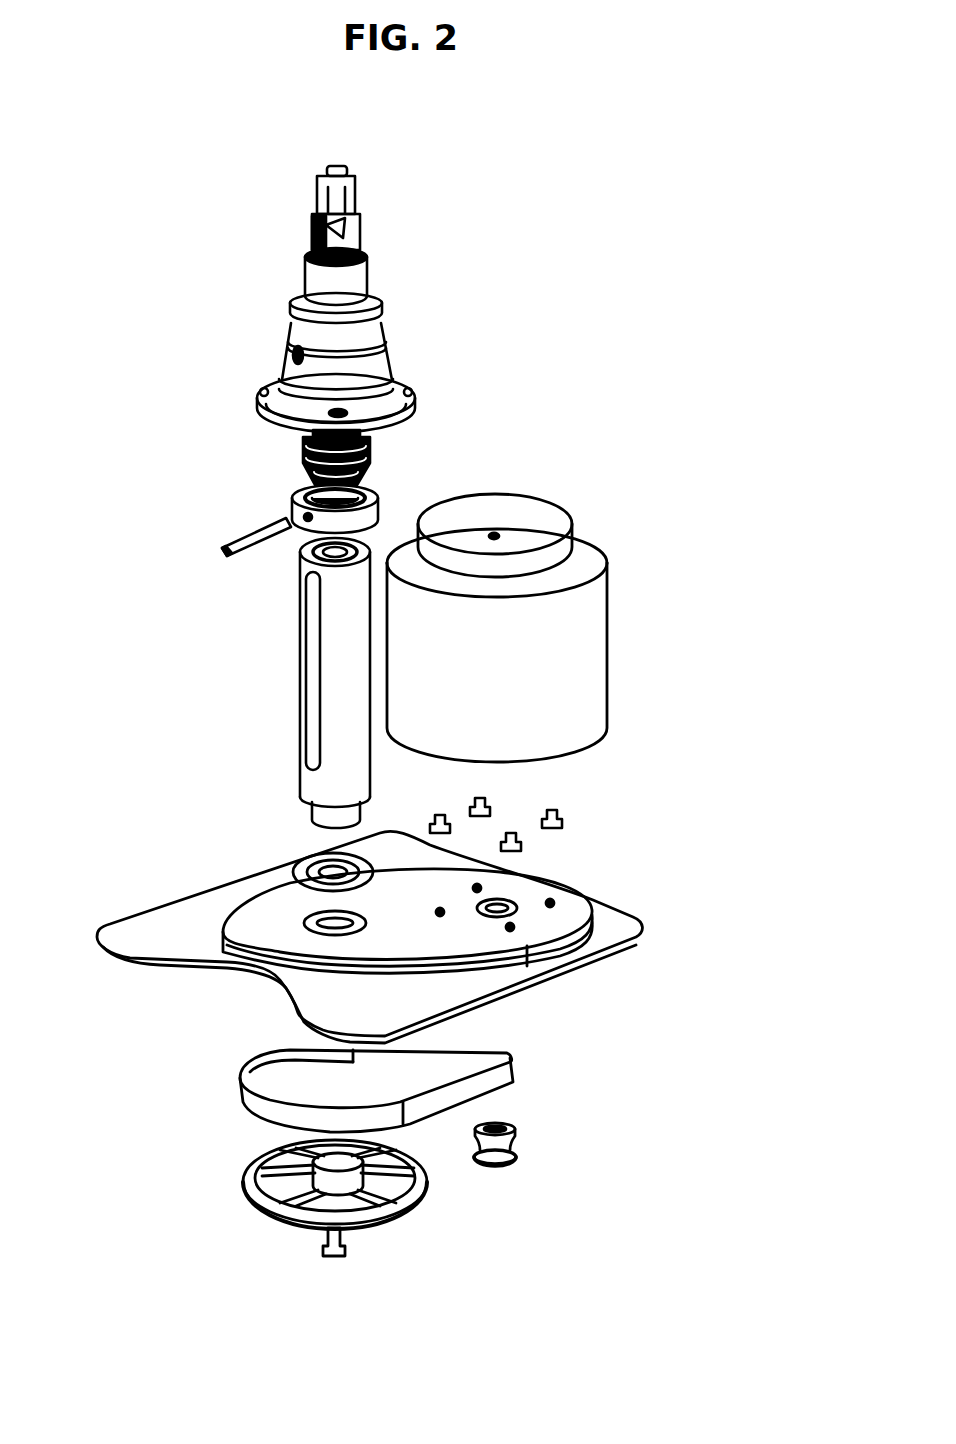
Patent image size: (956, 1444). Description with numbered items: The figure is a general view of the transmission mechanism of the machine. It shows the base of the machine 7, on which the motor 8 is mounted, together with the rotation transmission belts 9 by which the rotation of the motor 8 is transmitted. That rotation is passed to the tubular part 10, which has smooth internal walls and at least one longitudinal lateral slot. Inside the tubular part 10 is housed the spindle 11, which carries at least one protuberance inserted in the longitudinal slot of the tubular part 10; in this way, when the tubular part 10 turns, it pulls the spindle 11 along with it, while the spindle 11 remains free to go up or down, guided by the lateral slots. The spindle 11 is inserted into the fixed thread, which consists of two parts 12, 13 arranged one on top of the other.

The base of the machine 7 is at (160, 947).
The motor 8 is at (517, 510).
The rotation transmission belts 9 is at (243, 1093).
The tubular part 10 is at (315, 775).
The spindle 11 is at (293, 489).
The fixed thread part 12 is at (285, 362).
The fixed thread part 13 is at (318, 283).